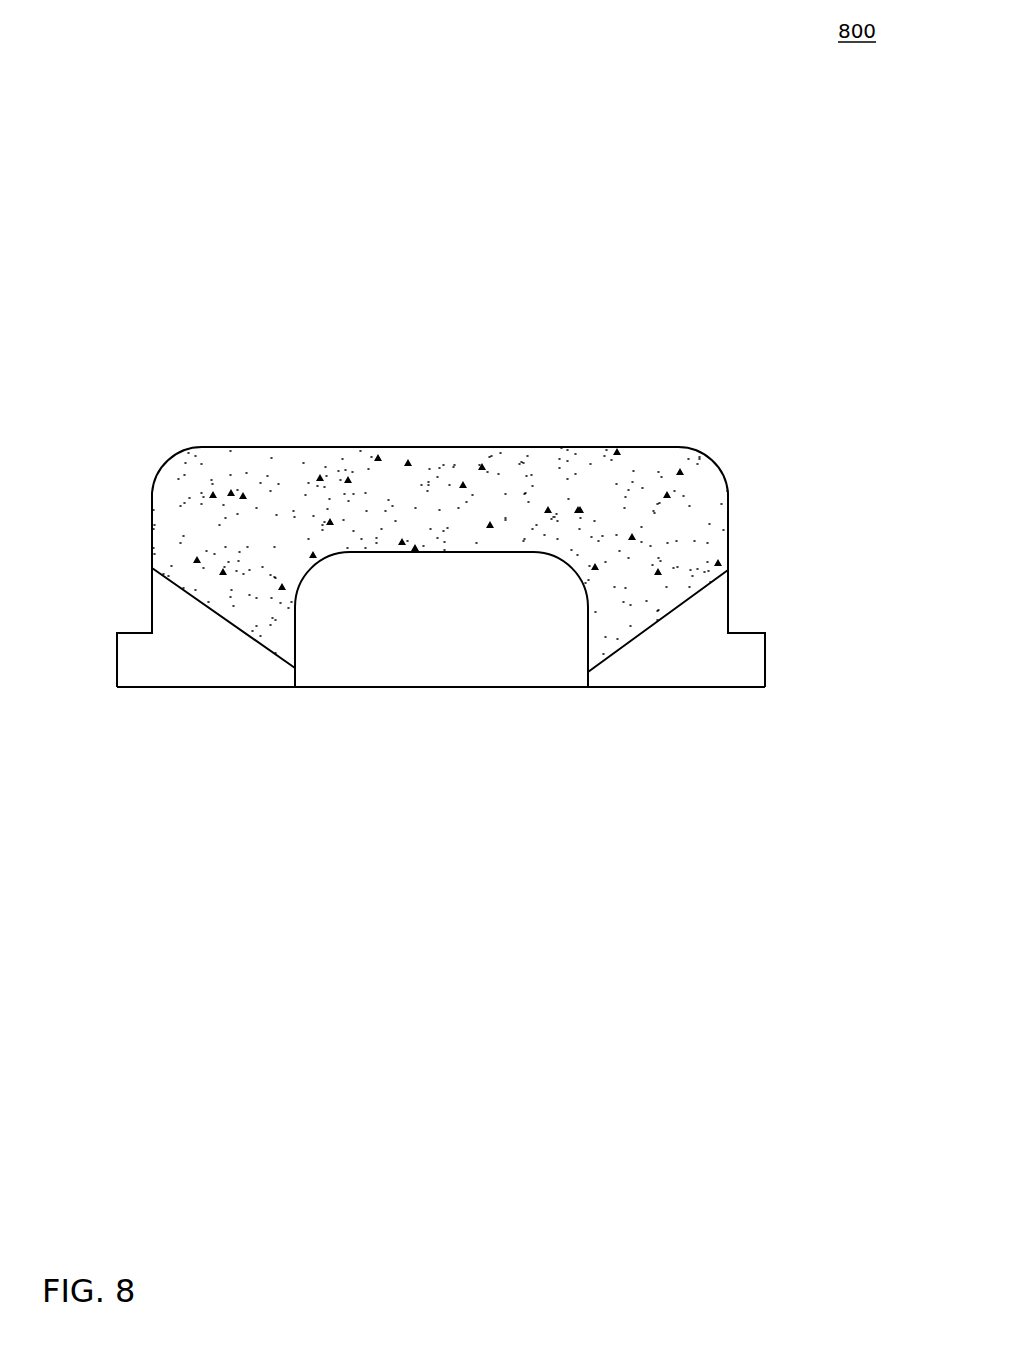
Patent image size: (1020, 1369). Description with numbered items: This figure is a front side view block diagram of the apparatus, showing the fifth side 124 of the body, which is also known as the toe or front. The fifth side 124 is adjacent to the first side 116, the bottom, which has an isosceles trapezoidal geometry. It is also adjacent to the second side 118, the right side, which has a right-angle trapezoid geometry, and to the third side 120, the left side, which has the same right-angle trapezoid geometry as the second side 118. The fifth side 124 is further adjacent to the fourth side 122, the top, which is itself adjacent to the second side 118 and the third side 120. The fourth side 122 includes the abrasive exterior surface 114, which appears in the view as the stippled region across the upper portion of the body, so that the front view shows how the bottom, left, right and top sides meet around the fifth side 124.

The abrasive exterior surface 114 is at (320, 460).
The first side 116 is at (542, 687).
The second side 118 is at (150, 542).
The third side 120 is at (726, 543).
The fourth side 122 is at (450, 447).
The fifth side 124 is at (388, 660).